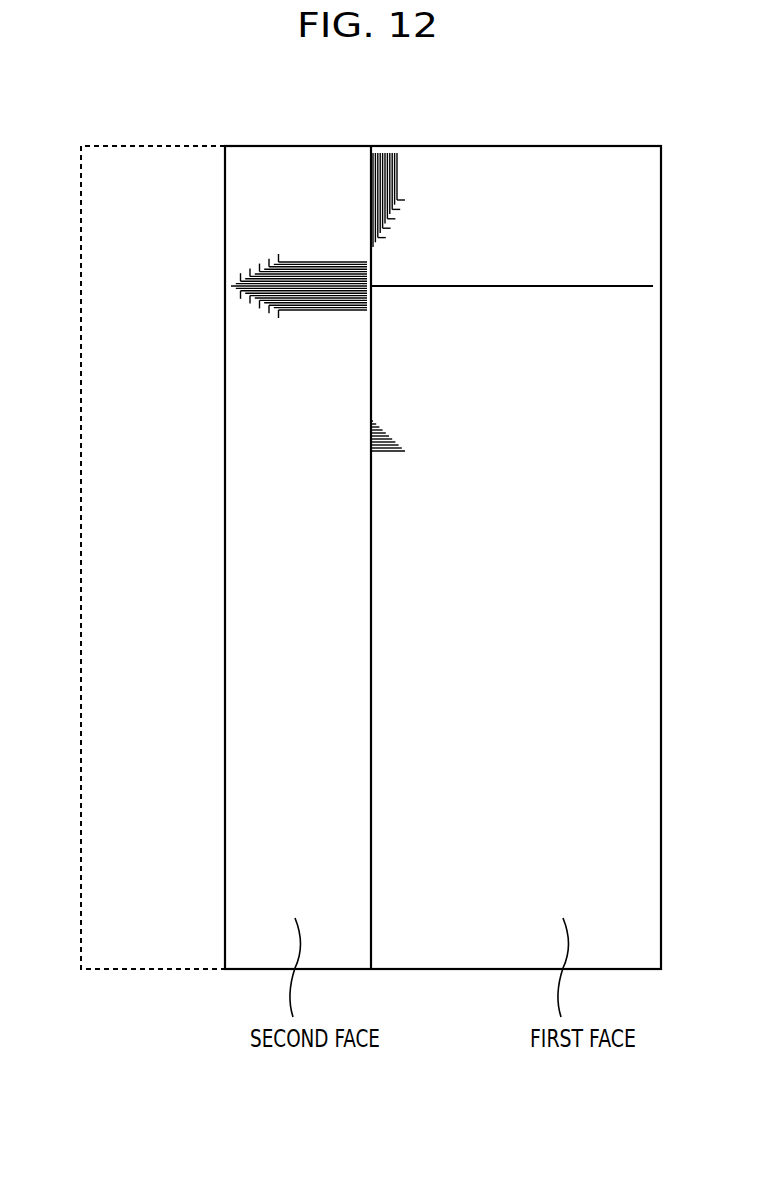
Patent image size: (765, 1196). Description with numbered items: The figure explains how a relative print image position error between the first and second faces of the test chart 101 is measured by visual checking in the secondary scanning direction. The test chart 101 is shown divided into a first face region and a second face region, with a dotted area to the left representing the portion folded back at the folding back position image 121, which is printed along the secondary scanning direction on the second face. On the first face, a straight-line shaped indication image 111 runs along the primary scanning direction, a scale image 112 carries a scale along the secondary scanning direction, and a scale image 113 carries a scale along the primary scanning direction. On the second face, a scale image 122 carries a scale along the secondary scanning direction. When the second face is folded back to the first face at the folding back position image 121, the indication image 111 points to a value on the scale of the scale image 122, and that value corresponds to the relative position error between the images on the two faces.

The test chart 101 is at (617, 146).
The indication image 111 is at (583, 283).
The scale image 112 is at (400, 427).
The scale image 113 is at (418, 186).
The folding back position image 121 is at (221, 330).
The scale image 122 is at (311, 251).